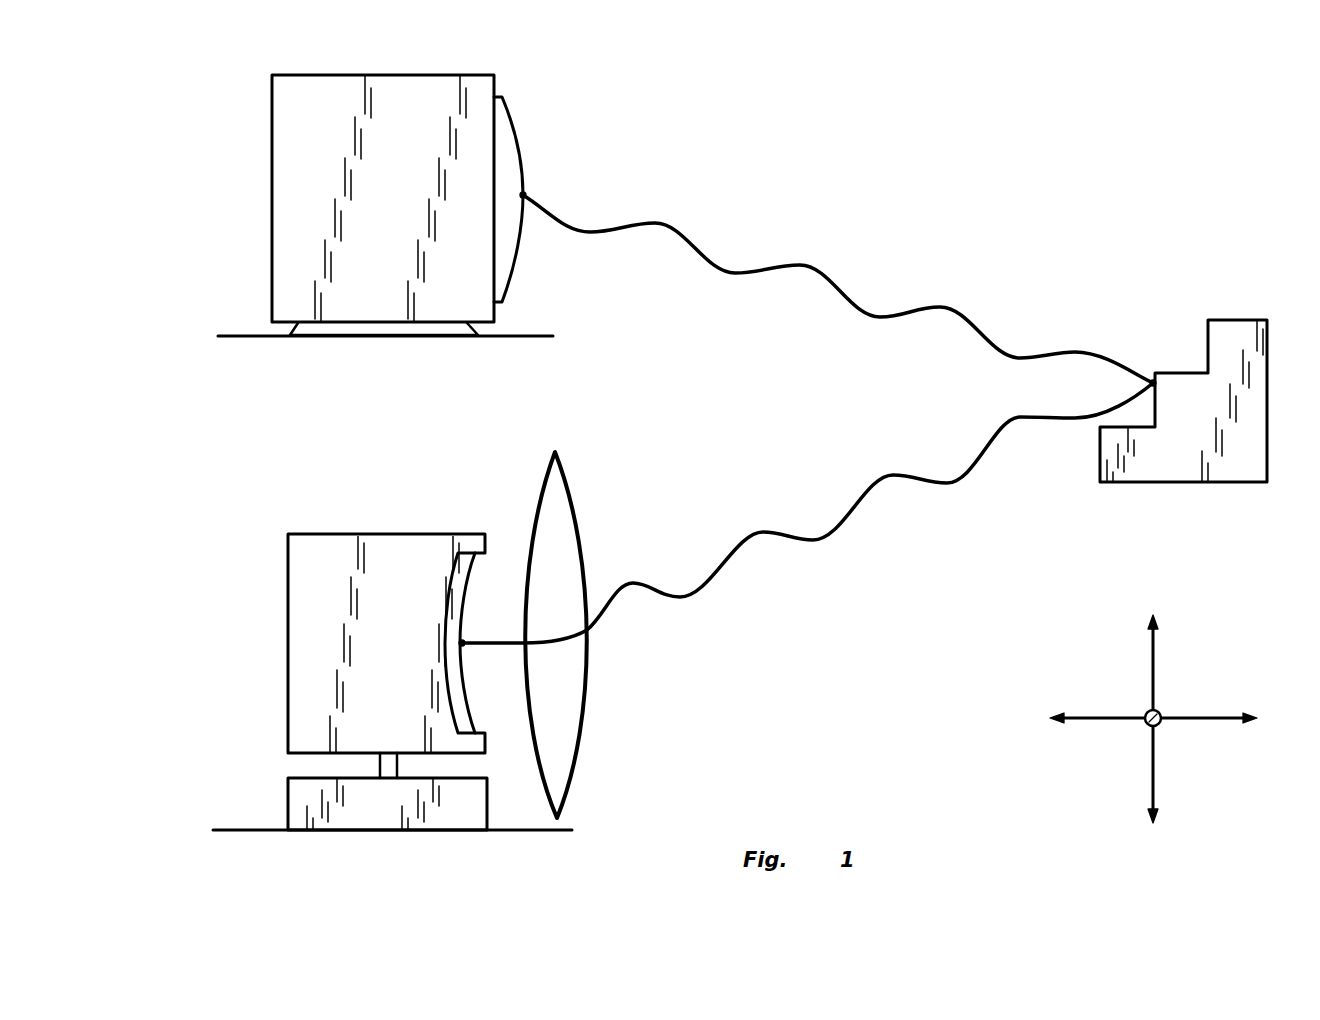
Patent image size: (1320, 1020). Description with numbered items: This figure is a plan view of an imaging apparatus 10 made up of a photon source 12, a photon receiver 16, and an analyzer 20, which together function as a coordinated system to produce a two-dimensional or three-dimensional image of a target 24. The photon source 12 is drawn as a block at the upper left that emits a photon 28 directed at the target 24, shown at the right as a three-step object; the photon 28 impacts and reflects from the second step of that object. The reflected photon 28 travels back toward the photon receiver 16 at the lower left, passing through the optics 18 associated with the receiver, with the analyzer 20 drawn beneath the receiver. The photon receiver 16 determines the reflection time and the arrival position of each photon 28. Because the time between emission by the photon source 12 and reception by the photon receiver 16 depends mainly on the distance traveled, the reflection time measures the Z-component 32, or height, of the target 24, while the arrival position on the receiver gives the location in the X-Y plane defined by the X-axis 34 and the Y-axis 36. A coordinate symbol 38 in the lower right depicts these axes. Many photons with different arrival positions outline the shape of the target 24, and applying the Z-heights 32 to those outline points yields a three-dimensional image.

The imaging apparatus 10 is at (1125, 165).
The photon source 12 is at (397, 210).
The photon receiver 16 is at (303, 621).
The optics 18 is at (570, 543).
The analyzer 20 is at (387, 818).
The target 24 is at (1209, 430).
The photon 28 is at (523, 195).
The Z-component 32 is at (1202, 718).
The X-axis 34 is at (1147, 724).
The Y-axis 36 is at (1155, 763).
The coordinate system 38 is at (1144, 716).